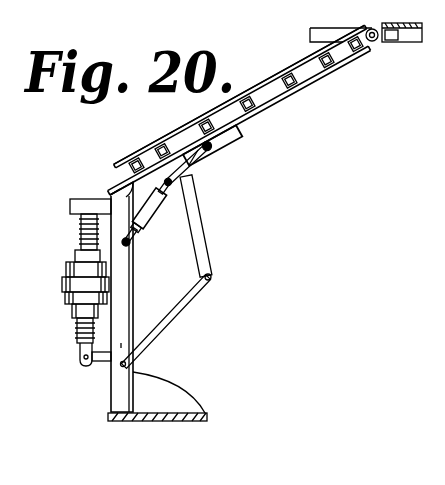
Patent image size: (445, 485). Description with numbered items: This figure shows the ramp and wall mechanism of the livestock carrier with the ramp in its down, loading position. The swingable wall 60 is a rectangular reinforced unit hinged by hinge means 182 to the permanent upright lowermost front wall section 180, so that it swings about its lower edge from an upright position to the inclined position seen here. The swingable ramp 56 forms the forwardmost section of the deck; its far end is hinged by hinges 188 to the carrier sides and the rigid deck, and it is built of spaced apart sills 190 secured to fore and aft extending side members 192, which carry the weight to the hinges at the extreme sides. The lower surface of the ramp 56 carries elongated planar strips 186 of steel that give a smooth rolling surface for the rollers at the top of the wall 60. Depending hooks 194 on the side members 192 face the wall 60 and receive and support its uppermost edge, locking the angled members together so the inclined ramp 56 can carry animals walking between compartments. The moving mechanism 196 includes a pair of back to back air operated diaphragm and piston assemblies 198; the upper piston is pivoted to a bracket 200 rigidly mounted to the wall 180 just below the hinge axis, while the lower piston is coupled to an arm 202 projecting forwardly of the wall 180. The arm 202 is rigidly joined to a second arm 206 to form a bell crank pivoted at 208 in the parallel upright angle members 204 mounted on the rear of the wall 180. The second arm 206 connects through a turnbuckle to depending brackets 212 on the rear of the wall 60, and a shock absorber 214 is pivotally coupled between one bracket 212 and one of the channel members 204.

The swingable ramp 56 is at (303, 62).
The swingable wall 60 is at (118, 181).
The lowermost front wall section 180 is at (116, 275).
The hinge means 182 is at (110, 196).
The planar strips 186 is at (212, 149).
The hinges 188 is at (372, 44).
The sills 190 is at (333, 66).
The side members 192 is at (272, 96).
The depending hooks 194 is at (238, 141).
The mechanism 196 is at (68, 260).
The air operated diaphragm and piston assemblies 198 is at (62, 300).
The bracket 200 is at (70, 208).
The arm 202 is at (103, 362).
The upright angle members 204 is at (123, 346).
The second arm 206 is at (185, 306).
The pivot 208 is at (212, 278).
The depending brackets 212 is at (174, 181).
The shock absorber 214 is at (142, 220).